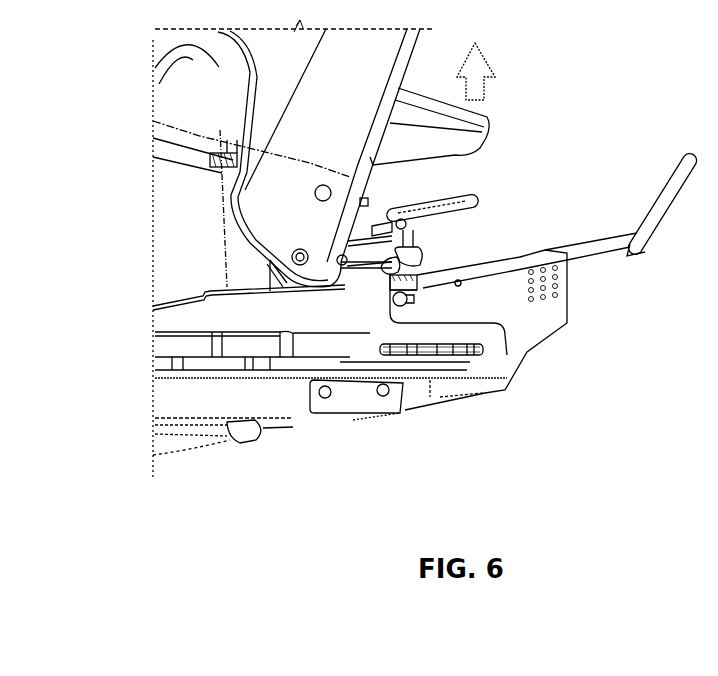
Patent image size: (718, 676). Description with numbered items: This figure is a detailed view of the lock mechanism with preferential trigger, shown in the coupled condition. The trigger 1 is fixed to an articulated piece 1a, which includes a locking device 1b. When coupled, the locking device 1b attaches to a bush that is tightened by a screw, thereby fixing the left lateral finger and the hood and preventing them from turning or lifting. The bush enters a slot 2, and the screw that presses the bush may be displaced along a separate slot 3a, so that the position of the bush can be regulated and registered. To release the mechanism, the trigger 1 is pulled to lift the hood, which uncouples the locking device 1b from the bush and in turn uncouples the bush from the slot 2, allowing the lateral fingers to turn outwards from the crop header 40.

The trigger 1 is at (472, 190).
The articulated piece 1a is at (387, 231).
The locking device 1b is at (376, 274).
The slot 2 is at (408, 245).
The slot 3a is at (418, 299).
The crop header 40 is at (472, 357).